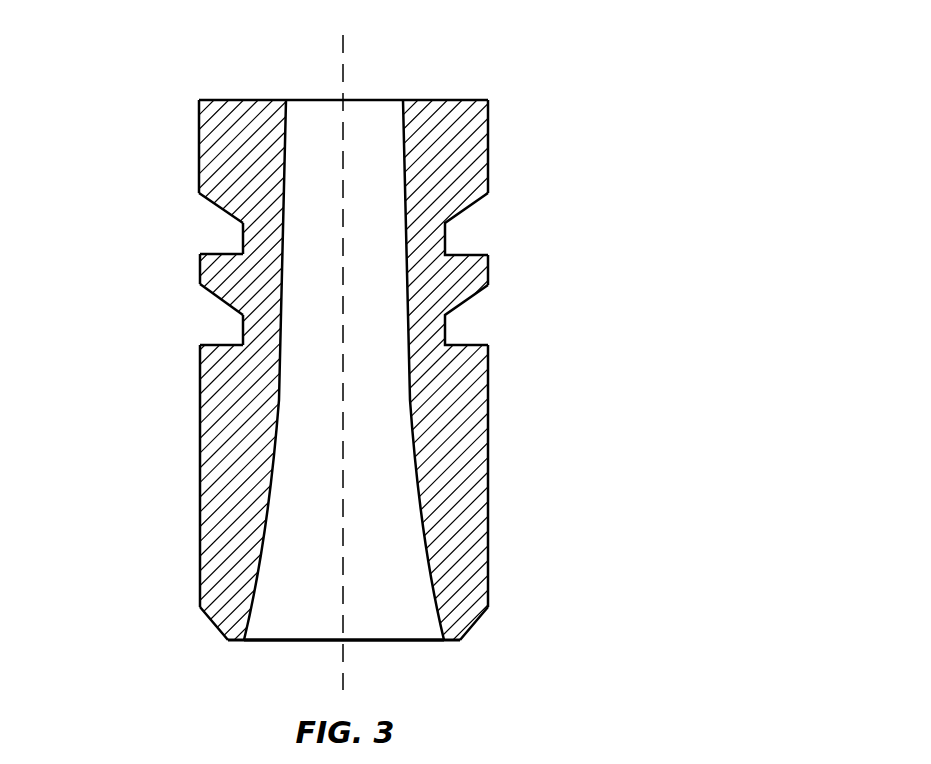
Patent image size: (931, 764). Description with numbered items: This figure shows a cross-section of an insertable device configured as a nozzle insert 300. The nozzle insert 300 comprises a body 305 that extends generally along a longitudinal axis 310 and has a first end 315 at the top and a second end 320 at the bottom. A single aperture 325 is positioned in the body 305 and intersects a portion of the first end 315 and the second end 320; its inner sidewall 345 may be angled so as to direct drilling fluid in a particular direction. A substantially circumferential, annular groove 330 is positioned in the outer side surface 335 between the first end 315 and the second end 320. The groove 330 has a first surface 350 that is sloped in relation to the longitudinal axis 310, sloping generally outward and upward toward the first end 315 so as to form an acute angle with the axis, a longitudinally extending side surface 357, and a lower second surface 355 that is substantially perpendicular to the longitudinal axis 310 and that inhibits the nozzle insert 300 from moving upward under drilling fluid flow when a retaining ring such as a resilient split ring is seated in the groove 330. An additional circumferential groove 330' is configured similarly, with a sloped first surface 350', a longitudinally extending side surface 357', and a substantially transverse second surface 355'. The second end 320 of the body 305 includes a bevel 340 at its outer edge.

The nozzle insert 300 is at (153, 90).
The longitudinal axis 310 is at (344, 38).
The first end 315 is at (463, 100).
The body 305 is at (488, 170).
The circumferential groove 330 is at (525, 227).
The additional circumferential groove 330' is at (527, 316).
The outer side surface 335 is at (488, 418).
The bevel 340 is at (480, 617).
The second end 320 is at (410, 641).
The aperture 325 is at (303, 611).
The inner sidewall 345 is at (268, 493).
The first surface 350 is at (182, 202).
The longitudinally extending side surface 357 is at (168, 232).
The second surface 355 is at (173, 252).
The first surface 350' is at (179, 292).
The longitudinally extending side surface 357' is at (167, 322).
The second surface 355' is at (172, 342).